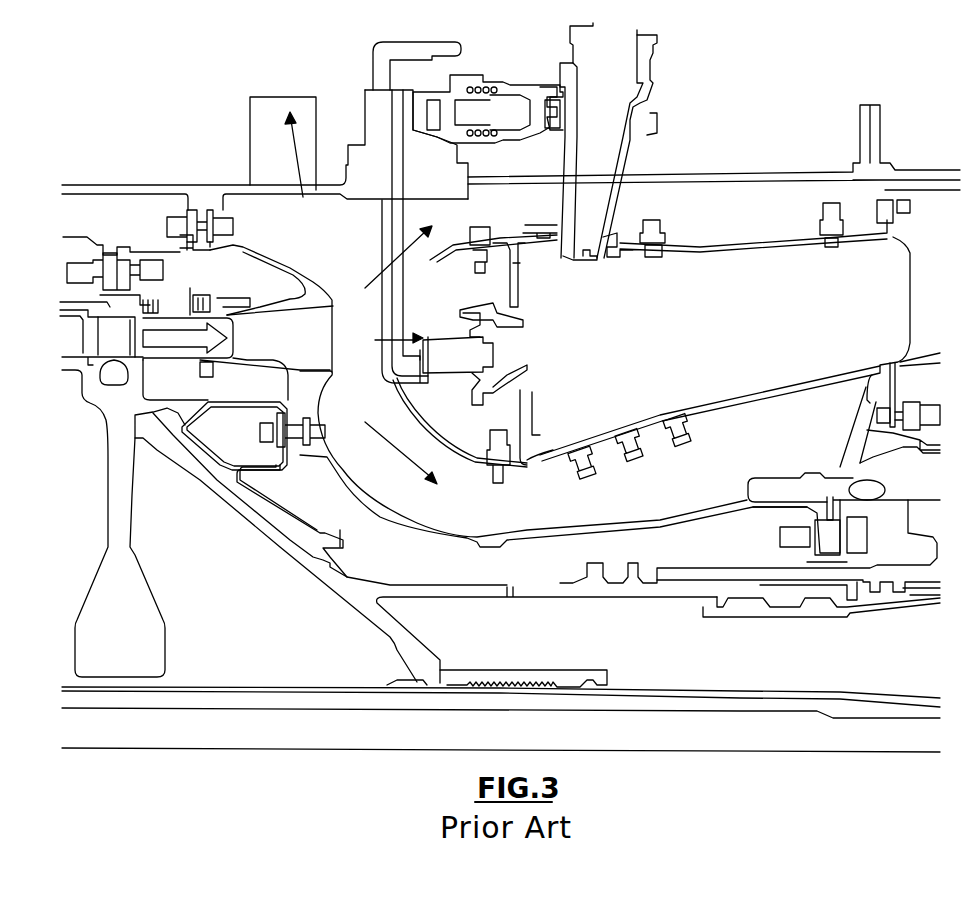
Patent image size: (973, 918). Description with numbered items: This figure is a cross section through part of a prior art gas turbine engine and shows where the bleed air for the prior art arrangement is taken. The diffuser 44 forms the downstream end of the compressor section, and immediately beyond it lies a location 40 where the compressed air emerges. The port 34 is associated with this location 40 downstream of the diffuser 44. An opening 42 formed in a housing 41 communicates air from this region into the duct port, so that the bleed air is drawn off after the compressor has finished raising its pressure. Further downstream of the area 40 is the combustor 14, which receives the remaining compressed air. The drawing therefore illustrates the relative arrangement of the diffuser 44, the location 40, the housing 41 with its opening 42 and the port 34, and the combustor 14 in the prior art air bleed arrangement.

The combustor 14 is at (570, 300).
The port 34 is at (252, 185).
The location downstream of the diffuser 40 is at (371, 331).
The housing 41 is at (203, 185).
The opening 42 is at (283, 192).
The diffuser 44 is at (290, 350).